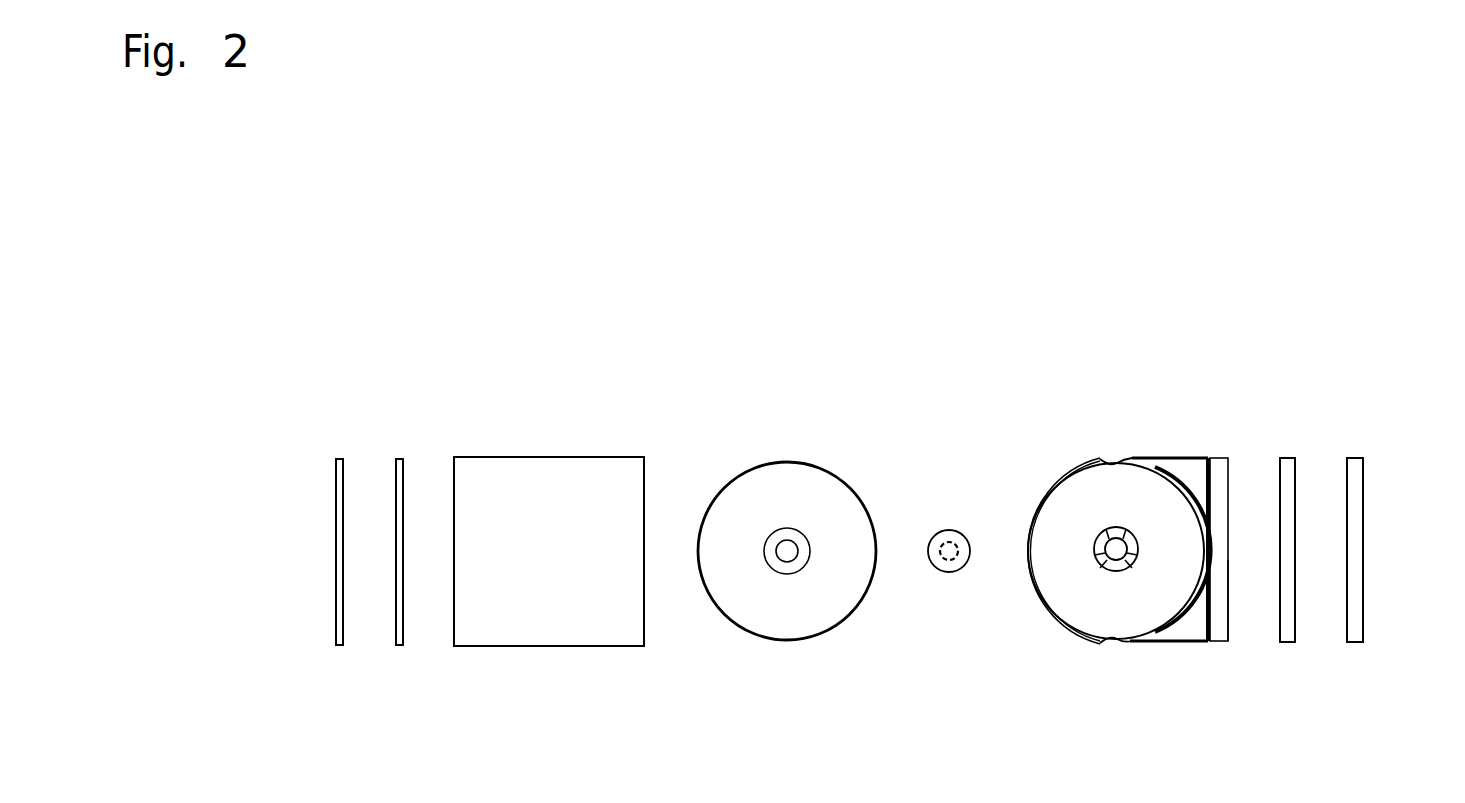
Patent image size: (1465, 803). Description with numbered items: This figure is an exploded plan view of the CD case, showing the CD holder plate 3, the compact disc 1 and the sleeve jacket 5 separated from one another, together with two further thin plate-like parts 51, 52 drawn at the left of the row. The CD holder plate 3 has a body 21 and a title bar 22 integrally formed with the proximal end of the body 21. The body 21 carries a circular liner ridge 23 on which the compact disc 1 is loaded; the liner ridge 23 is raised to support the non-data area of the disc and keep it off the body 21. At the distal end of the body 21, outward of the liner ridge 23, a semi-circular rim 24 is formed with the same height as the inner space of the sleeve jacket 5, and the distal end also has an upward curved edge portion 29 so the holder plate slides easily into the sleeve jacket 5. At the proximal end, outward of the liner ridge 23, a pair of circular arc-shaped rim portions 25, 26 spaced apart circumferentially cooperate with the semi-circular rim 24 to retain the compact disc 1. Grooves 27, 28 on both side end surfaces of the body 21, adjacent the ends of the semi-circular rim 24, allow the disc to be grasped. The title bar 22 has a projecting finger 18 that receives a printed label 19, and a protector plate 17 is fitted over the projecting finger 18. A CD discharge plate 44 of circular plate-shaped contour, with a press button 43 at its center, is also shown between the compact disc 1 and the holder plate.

The compact disc 1 is at (852, 500).
The CD holder plate 3 is at (1188, 643).
The sleeve jacket 5 is at (623, 472).
The protector plate 17 is at (1362, 497).
The projecting finger 18 is at (1228, 630).
The printed label 19 is at (1296, 472).
The body 21 is at (1065, 605).
The title bar 22 is at (1217, 468).
The circular liner ridge 23 is at (1200, 573).
The semi-circular rim 24 is at (1047, 488).
The circular arc-shaped rim portion 25 is at (1157, 465).
The circular arc-shaped rim portion 26 is at (1150, 633).
The groove 27 is at (1111, 423).
The groove 28 is at (1115, 636).
The upward curved edge portion 29 is at (1025, 578).
The press button 43 is at (953, 538).
The CD discharge plate 44 is at (938, 567).
The thin plate 51 is at (396, 515).
The thin plate 52 is at (336, 531).